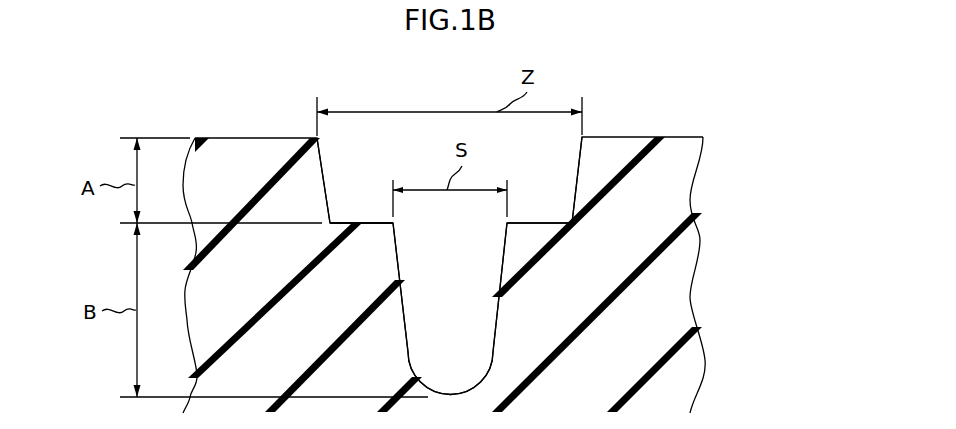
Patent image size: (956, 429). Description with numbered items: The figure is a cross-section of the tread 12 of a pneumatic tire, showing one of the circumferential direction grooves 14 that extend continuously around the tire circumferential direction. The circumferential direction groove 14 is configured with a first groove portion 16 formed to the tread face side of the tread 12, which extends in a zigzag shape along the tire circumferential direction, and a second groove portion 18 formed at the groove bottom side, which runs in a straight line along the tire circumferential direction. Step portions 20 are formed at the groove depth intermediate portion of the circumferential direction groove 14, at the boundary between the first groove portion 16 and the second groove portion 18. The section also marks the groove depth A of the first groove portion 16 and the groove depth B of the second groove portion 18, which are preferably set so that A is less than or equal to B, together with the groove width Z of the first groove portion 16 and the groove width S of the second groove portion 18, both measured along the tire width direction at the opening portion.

The tread 12 is at (672, 137).
The circumferential direction groove 14 is at (452, 200).
The first groove portion 16 is at (572, 196).
The second groove portion 18 is at (496, 310).
The step portion 20 is at (364, 222).